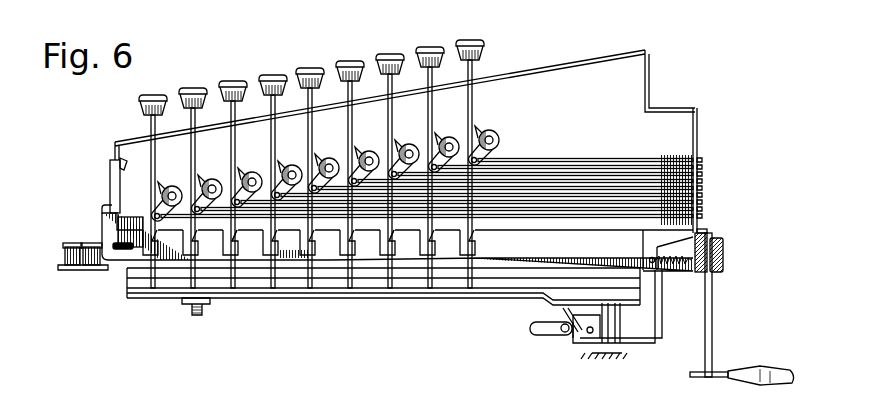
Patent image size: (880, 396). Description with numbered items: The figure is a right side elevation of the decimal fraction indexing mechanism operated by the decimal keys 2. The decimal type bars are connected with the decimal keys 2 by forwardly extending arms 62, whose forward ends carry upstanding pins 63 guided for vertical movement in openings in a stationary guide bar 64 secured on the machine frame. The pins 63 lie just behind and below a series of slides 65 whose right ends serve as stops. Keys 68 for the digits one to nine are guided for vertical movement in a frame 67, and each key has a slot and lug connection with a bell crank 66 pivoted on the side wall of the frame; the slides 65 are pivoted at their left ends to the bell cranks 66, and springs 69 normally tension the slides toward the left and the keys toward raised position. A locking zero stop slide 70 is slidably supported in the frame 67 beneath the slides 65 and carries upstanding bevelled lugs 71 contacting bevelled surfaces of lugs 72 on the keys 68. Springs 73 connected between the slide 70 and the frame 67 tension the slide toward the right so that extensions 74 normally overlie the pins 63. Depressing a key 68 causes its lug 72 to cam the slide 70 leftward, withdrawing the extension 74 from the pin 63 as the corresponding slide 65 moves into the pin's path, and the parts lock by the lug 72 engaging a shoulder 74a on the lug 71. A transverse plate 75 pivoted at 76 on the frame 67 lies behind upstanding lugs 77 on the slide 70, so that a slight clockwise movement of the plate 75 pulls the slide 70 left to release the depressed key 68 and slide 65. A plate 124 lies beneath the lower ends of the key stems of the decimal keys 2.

The decimal keys 2 is at (292, 54).
The frame 67 is at (647, 80).
The keys 68 is at (193, 124).
The bell crank 66 is at (394, 136).
The slides 65 is at (612, 190).
The springs 69 is at (679, 160).
The pivot 76 is at (114, 150).
The plate 75 is at (110, 190).
The upstanding lugs 77 is at (102, 211).
The locking zero stop slide 70 is at (486, 256).
The lugs 72 is at (309, 240).
The shoulder 74a is at (238, 236).
The bevelled lugs 71 is at (390, 241).
The plate 124 is at (328, 284).
The springs 73 is at (678, 263).
The extensions 74 is at (702, 232).
The guide bar 64 is at (723, 255).
The pins 63 is at (713, 302).
The arms 62 is at (758, 355).